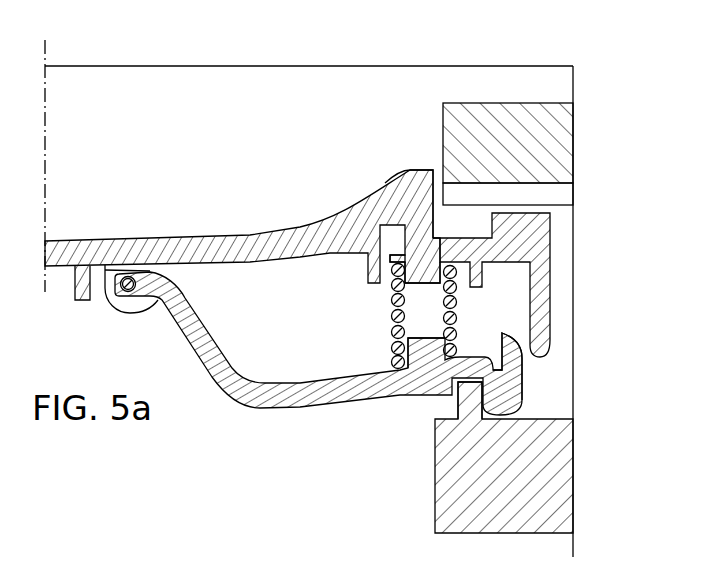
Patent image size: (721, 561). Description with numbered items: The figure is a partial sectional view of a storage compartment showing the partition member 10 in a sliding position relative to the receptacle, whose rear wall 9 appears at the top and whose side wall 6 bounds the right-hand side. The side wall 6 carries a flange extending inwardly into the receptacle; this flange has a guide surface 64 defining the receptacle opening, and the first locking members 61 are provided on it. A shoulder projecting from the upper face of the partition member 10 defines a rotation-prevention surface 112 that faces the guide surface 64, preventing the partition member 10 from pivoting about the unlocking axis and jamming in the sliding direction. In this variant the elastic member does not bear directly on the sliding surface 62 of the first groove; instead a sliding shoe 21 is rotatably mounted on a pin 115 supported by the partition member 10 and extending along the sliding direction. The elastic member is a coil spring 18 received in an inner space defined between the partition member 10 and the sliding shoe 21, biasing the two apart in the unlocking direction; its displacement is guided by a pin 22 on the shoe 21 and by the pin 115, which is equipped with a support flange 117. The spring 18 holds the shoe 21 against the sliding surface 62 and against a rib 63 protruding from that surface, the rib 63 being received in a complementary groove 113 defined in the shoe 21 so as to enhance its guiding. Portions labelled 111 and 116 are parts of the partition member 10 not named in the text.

The rear wall 9 is at (141, 86).
The side wall 6 is at (575, 82).
The partition member 10 is at (153, 219).
The coil spring 18 is at (394, 318).
The sliding shoe 21 is at (333, 390).
The pin 22 is at (420, 352).
The first locking members 61 is at (564, 194).
The sliding surface 62 is at (553, 418).
The rib 63 is at (470, 408).
The guide surface 64 is at (443, 122).
The bracket 111 is at (528, 233).
The rotation-prevention surface 112 is at (435, 168).
The groove 113 is at (495, 374).
The pin 115 is at (128, 290).
The column 116 is at (424, 271).
The support flange 117 is at (397, 257).